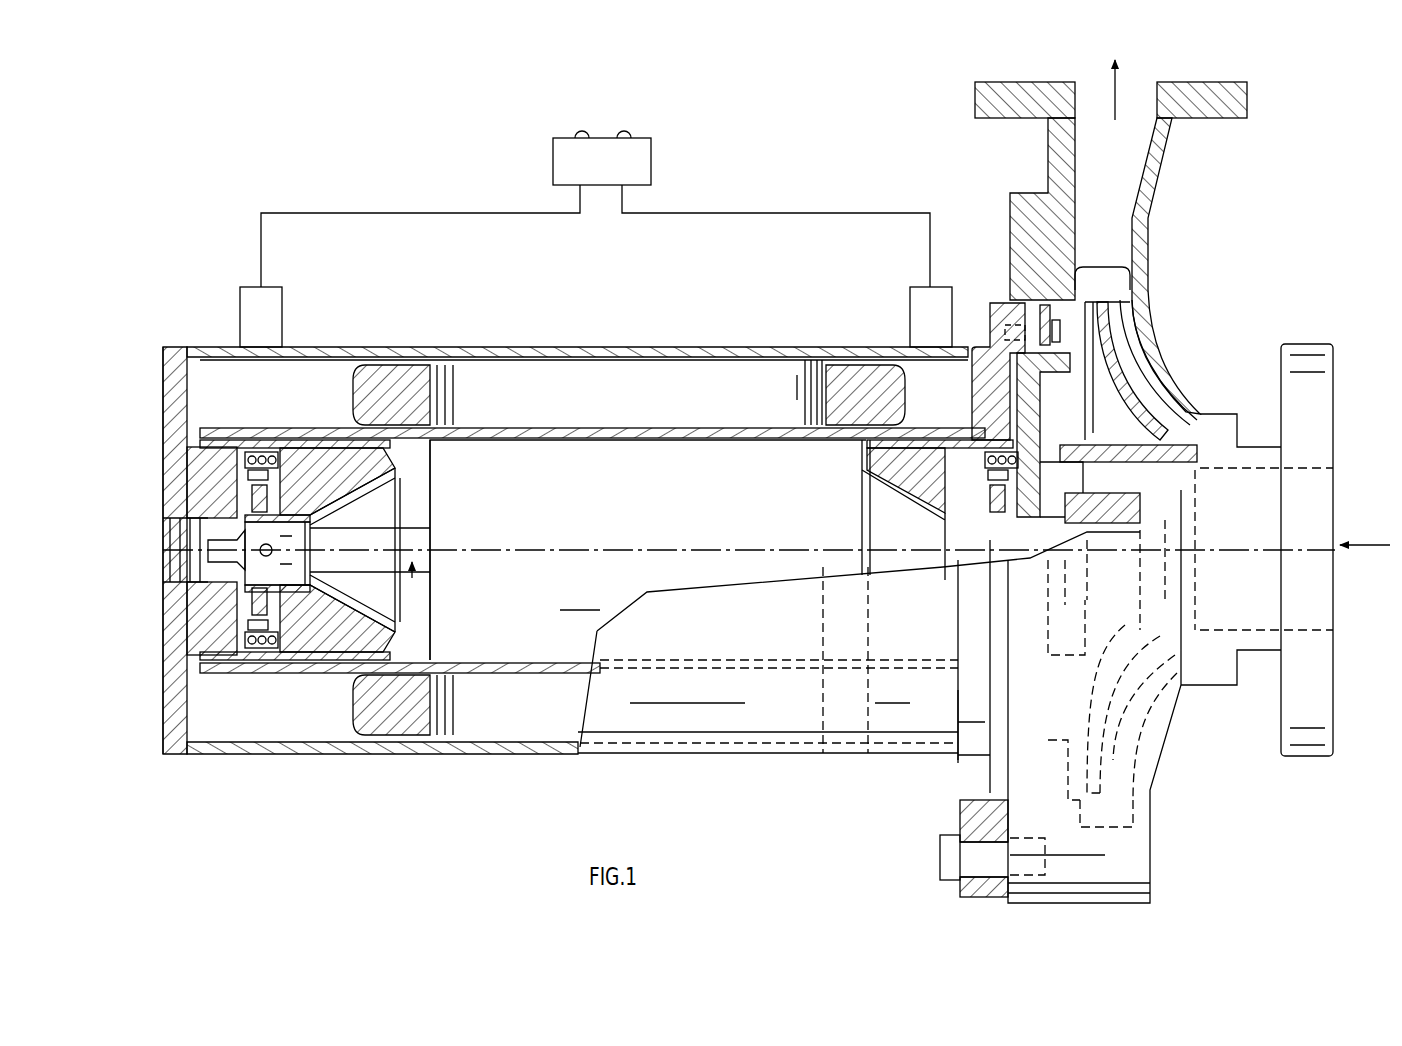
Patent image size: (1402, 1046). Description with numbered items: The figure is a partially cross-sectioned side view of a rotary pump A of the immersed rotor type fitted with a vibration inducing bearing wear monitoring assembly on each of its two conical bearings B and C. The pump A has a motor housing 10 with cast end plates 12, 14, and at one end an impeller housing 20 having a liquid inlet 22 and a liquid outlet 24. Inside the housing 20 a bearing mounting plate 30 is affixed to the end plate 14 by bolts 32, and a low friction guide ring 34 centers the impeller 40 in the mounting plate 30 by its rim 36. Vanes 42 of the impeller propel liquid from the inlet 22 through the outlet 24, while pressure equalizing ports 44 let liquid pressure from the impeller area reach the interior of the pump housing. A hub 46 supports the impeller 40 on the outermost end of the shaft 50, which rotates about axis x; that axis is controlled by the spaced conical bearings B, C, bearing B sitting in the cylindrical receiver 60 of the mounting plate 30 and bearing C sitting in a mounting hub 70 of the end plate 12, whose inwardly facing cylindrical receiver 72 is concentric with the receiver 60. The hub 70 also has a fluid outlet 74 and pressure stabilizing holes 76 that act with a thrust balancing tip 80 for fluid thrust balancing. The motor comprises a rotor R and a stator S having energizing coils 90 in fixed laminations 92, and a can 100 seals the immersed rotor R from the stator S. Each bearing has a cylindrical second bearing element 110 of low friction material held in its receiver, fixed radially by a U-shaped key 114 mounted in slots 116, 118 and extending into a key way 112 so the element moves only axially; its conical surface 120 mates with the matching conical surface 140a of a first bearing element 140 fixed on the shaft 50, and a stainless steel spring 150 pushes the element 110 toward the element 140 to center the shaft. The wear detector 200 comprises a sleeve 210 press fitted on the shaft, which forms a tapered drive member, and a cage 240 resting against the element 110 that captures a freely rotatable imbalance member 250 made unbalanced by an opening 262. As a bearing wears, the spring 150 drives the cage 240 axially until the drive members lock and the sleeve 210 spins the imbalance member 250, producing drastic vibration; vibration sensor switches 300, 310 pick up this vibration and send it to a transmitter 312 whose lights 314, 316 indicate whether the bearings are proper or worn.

The motor housing 10 is at (742, 348).
The end plate 12 is at (165, 365).
The end plate 14 is at (992, 307).
The impeller housing 20 is at (1175, 167).
The liquid inlet 22 is at (1322, 405).
The liquid outlet 24 is at (1150, 250).
The bearing mounting plate 30 is at (1015, 398).
The bolts 32 is at (1050, 327).
The low friction guide ring 34 is at (1070, 397).
The rim 36 is at (1072, 450).
The impeller 40 is at (1140, 393).
The vanes 42 is at (1105, 335).
The pressure equalizing ports 44 is at (1108, 480).
The hub 46 is at (1115, 505).
The shaft 50 is at (402, 512).
The cylindrical receiver 60 is at (903, 514).
The mounting hub 70 is at (185, 450).
The cylindrical receiver 72 is at (312, 458).
The fluid outlet 74 is at (165, 551).
The pressure stabilizing holes 76 is at (258, 452).
The thrust balancing tip 80 is at (222, 554).
The energizing coils 90 is at (405, 378).
The fixed laminations 92 is at (563, 360).
The can 100 is at (545, 432).
The second bearing element 110 is at (362, 457).
The key way 112 is at (372, 640).
The U-shaped key 114 is at (340, 658).
The slot 116 is at (380, 652).
The slot 118 is at (283, 655).
The conical surface 120 is at (400, 628).
The first bearing element 140 is at (395, 540).
The conical surface 140a is at (405, 521).
The spring 150 is at (243, 447).
The wear detector 200 is at (235, 485).
The sleeve 210 is at (302, 590).
The cage 240 is at (240, 636).
The imbalance member 250 is at (240, 500).
The opening 262 is at (232, 626).
The vibration sensor switch 300 is at (250, 290).
The vibration sensor switch 310 is at (918, 290).
The transmitter 312 is at (640, 160).
The light 314 is at (578, 130).
The light 316 is at (626, 130).
The stator S is at (480, 370).
The rotor R is at (625, 448).
The conical bearing B is at (905, 443).
The conical bearing C is at (330, 450).
The rotary pump A is at (1262, 200).
The axis x is at (660, 550).